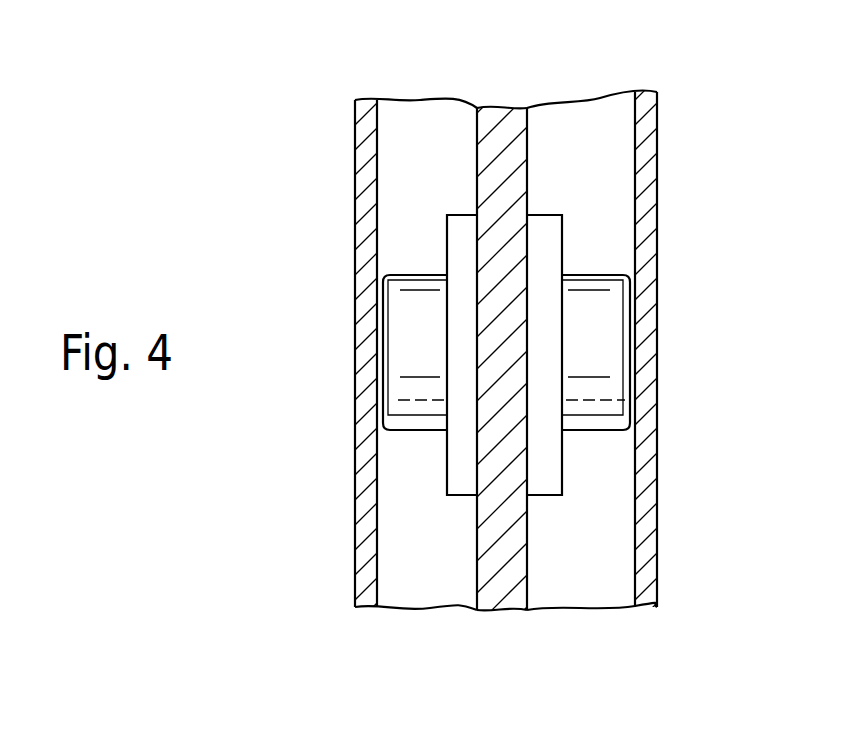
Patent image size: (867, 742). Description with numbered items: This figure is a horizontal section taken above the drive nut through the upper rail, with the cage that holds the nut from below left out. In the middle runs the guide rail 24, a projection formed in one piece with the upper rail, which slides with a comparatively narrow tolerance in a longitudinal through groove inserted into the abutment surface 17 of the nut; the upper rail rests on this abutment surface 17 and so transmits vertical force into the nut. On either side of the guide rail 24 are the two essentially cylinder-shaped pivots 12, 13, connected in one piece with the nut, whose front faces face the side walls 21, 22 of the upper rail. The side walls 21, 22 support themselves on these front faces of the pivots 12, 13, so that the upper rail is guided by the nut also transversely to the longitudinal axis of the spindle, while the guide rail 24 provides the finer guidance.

The guide rail 24 is at (503, 132).
The abutment surface 17 is at (542, 243).
The side wall 22 is at (365, 283).
The side wall 21 is at (643, 317).
The pivot 12 is at (403, 388).
The pivot 13 is at (607, 390).